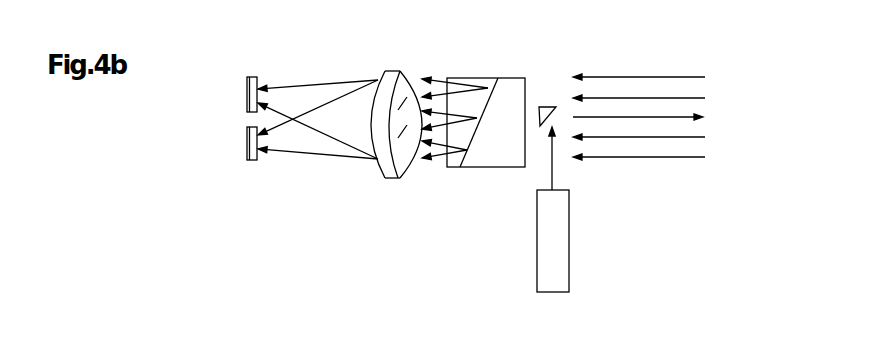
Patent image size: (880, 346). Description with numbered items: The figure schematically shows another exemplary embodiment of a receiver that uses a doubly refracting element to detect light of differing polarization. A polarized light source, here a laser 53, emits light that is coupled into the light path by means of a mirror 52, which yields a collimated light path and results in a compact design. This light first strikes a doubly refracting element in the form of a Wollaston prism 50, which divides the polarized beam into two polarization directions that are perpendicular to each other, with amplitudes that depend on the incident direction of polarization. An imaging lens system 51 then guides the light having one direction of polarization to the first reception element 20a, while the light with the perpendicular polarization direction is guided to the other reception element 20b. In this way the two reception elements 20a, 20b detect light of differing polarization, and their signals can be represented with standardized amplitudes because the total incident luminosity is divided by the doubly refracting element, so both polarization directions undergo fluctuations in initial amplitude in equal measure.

The first reception element 20a is at (249, 76).
The second reception element 20b is at (248, 163).
The imaging lens system 51 is at (390, 70).
The Wollaston prism 50 is at (505, 100).
The mirror 52 is at (548, 105).
The laser 53 is at (562, 249).